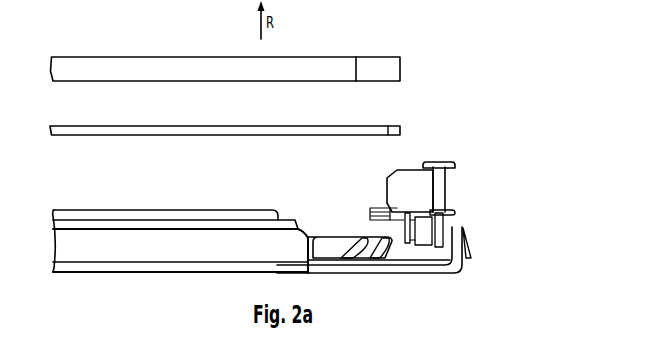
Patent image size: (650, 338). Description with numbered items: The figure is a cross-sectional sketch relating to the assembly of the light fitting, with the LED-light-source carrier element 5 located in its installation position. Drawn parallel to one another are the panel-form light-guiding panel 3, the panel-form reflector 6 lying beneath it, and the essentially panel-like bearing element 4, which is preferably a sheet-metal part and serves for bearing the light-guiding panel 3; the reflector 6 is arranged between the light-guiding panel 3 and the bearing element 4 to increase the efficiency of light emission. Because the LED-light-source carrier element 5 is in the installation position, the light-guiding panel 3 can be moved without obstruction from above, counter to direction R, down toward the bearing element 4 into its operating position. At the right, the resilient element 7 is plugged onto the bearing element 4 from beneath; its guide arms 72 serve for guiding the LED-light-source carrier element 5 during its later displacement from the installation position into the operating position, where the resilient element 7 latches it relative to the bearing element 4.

The light-guiding panel 3 is at (331, 59).
The reflector 6 is at (297, 127).
The bearing element 4 is at (209, 211).
The guide arms 72 is at (338, 240).
The LED-light-source carrier element 5 is at (450, 191).
The resilient element 7 is at (465, 267).